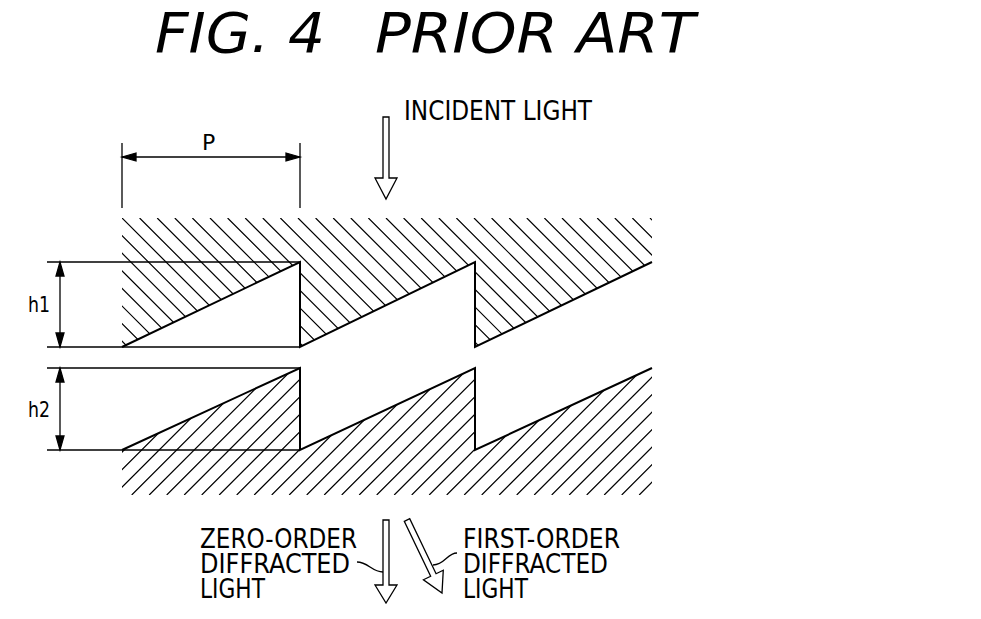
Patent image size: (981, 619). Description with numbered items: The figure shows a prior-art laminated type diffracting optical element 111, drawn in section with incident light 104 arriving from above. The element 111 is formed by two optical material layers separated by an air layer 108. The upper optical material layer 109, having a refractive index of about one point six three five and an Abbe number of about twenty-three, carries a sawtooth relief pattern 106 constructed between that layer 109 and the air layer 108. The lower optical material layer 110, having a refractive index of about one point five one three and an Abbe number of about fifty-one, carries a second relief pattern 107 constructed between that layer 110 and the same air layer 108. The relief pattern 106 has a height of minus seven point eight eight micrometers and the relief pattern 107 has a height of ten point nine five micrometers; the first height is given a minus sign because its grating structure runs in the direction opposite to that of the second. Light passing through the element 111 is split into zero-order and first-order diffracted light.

The incident light 104 is at (389, 150).
The relief pattern 106 is at (615, 285).
The relief pattern 107 is at (617, 392).
The air layer 108 is at (617, 333).
The optical material layer 109 is at (395, 288).
The optical material layer 110 is at (394, 425).
The laminated type diffracting optical element 111 is at (406, 356).